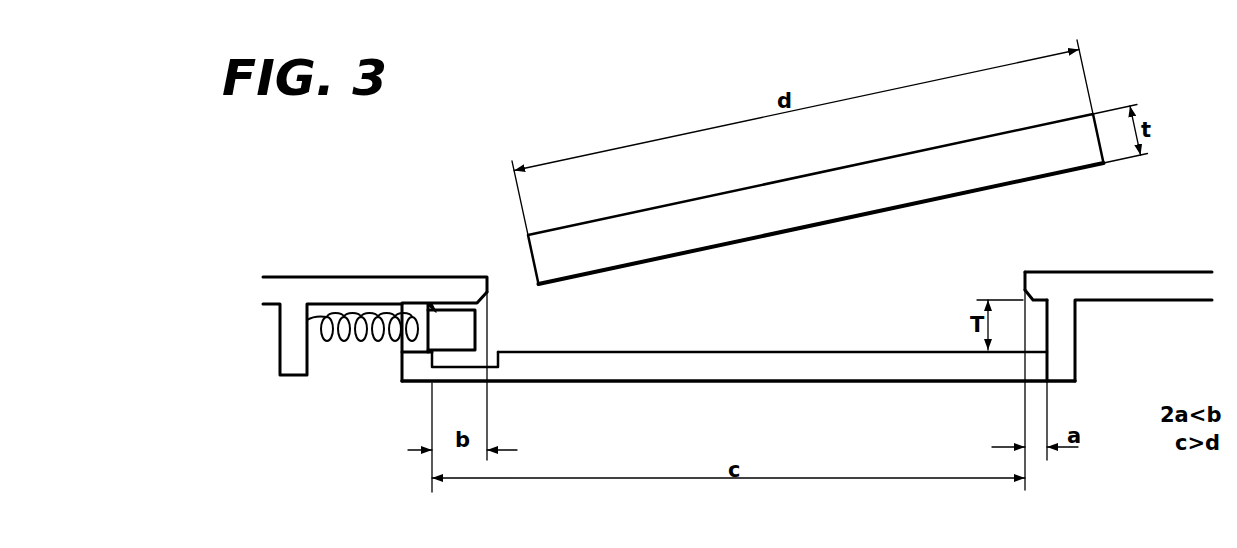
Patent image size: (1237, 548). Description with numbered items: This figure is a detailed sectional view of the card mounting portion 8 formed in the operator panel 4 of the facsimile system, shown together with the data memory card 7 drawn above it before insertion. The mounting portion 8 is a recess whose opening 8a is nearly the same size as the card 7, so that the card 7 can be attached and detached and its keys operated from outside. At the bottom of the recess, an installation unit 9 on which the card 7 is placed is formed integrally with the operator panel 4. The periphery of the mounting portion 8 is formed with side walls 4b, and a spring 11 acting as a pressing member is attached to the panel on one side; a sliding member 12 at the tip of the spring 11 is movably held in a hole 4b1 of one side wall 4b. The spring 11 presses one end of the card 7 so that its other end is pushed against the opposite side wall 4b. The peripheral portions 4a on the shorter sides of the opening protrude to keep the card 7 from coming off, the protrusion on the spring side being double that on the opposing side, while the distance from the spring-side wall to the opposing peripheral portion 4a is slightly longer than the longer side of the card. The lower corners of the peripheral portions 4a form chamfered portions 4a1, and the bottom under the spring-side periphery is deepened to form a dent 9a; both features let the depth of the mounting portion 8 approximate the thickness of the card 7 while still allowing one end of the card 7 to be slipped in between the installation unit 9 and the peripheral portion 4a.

The operator panel 4 is at (1130, 272).
The peripheral portion 4a is at (430, 280).
The chamfered portion 4a1 is at (487, 290).
The side wall 4b is at (403, 369).
The hole 4b1 is at (413, 307).
The data memory card 7 is at (660, 253).
The mounting portion 8 is at (903, 345).
The opening 8a is at (866, 302).
The installation unit 9 is at (752, 353).
The dent 9a is at (457, 357).
The spring 11 is at (330, 335).
The sliding member 12 is at (432, 342).